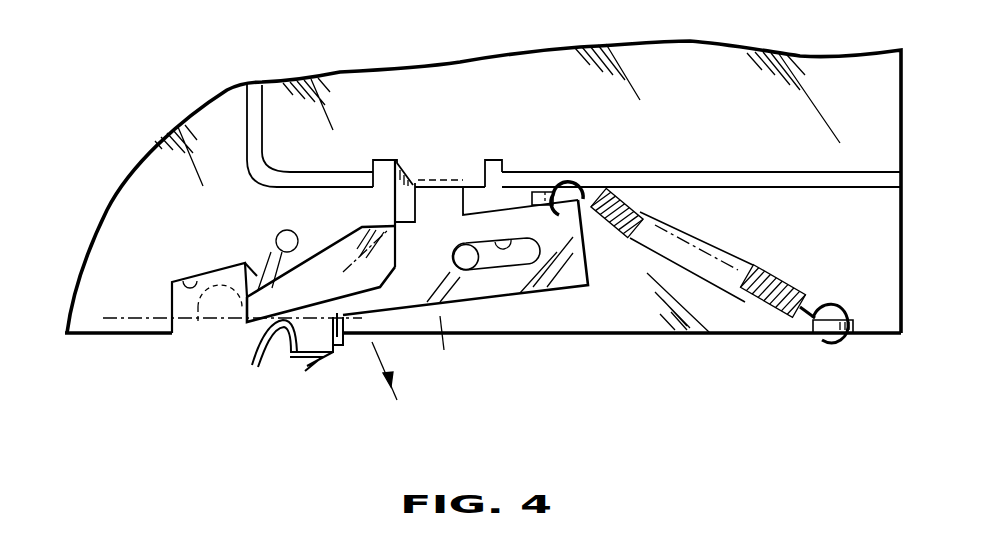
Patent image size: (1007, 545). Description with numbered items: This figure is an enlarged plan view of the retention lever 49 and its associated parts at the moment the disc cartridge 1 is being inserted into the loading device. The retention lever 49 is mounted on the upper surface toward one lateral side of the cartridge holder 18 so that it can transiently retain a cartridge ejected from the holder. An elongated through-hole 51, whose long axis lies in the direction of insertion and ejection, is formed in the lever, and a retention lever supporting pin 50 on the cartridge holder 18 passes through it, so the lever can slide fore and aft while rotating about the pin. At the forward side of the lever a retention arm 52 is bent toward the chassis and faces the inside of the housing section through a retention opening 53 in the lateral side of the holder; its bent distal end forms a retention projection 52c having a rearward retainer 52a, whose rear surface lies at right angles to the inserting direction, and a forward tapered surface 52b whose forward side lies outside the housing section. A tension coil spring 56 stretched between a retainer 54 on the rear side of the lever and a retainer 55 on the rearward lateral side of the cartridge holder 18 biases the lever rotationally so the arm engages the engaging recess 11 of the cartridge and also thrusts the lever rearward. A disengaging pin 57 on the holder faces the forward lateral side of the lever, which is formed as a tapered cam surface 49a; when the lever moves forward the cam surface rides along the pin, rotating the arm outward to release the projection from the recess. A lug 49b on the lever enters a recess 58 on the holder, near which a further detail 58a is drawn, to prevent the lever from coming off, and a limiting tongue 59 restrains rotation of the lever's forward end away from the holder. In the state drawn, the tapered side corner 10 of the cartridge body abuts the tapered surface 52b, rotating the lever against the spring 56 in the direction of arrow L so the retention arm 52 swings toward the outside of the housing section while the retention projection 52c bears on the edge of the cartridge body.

The disc cartridge 1 is at (127, 321).
The tapered side corner 10 is at (373, 291).
The engaging recess 11 is at (195, 327).
The cartridge holder 18 is at (449, 348).
The retention lever 49 is at (548, 278).
The cam surface 49a is at (330, 250).
The lug 49b is at (441, 197).
The retention lever supporting pin 50 is at (468, 262).
The elongated through-hole 51 is at (513, 240).
The retention arm 52 is at (322, 363).
The retainer 52a is at (298, 356).
The tapered surface 52b is at (258, 362).
The retention projection 52c is at (250, 341).
The retention opening 53 is at (193, 280).
The retainer 54 is at (568, 192).
The retainer 55 is at (833, 313).
The tension coil spring 56 is at (780, 276).
The disengaging pin 57 is at (278, 232).
The recess 58 is at (394, 188).
The latch tip 58a is at (237, 262).
The limiting tongue 59 is at (344, 352).
The arrow L is at (387, 371).